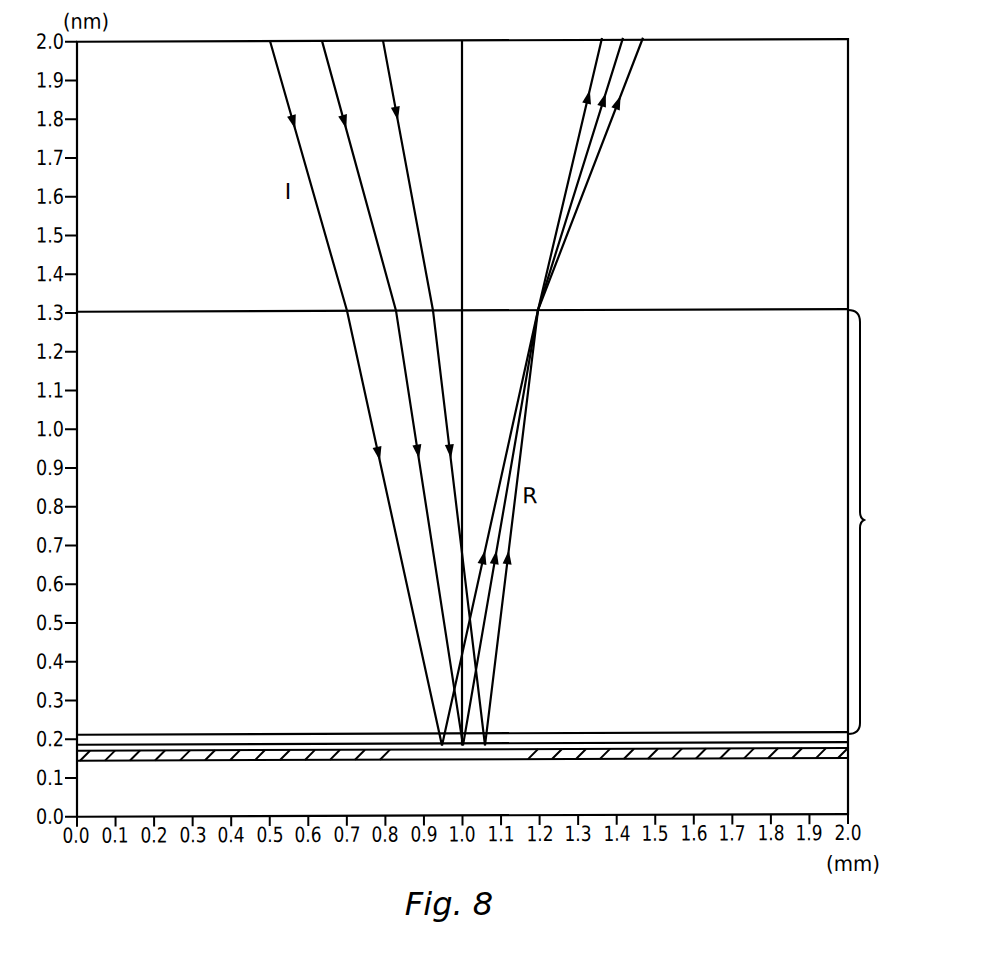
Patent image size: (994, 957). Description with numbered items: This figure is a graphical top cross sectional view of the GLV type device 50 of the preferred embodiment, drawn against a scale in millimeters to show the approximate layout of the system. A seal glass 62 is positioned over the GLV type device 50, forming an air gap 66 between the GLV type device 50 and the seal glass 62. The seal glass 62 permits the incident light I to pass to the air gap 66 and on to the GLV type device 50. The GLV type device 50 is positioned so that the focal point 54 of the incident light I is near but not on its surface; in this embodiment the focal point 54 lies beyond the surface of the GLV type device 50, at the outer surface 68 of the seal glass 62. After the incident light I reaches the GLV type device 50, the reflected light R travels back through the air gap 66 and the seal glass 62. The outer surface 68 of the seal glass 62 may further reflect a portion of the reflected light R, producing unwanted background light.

The GLV type device 50 is at (514, 773).
The focal point 54 is at (536, 364).
The seal glass 62 is at (871, 522).
The air gap 66 is at (218, 738).
The outer surface 68 is at (660, 307).